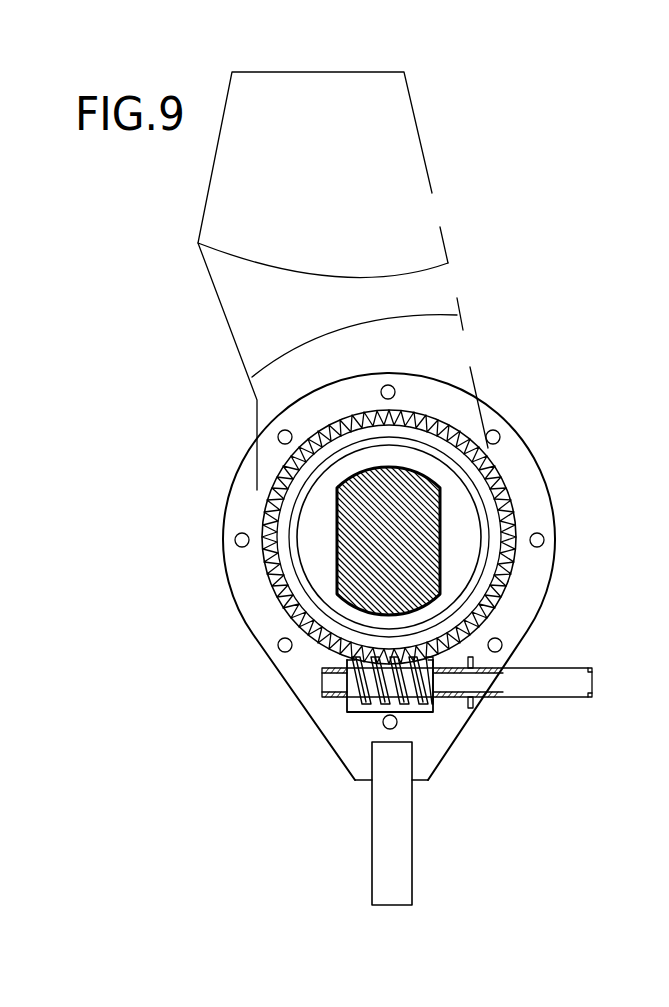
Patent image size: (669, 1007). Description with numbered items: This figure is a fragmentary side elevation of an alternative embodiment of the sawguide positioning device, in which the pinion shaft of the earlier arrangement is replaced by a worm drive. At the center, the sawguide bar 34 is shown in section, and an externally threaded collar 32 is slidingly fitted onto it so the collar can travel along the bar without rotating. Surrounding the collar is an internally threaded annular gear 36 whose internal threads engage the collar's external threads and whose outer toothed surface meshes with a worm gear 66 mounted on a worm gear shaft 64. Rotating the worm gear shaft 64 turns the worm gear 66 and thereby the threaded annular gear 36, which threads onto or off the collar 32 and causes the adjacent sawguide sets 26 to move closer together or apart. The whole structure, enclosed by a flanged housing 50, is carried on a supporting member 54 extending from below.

The sawguide set 26 is at (448, 263).
The flange housing 50 is at (543, 470).
The internally threaded annular gear 36 is at (512, 520).
The externally threaded collar 32 is at (320, 578).
The sawguide bar 34 is at (357, 540).
The worm gear shaft 64 is at (557, 670).
The worm gear 66 is at (435, 708).
The supporting member 54 is at (413, 820).